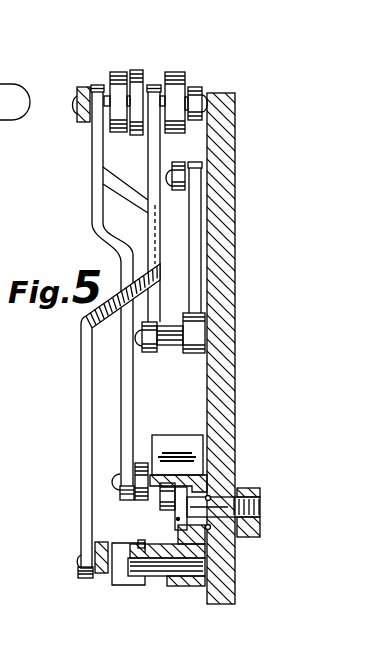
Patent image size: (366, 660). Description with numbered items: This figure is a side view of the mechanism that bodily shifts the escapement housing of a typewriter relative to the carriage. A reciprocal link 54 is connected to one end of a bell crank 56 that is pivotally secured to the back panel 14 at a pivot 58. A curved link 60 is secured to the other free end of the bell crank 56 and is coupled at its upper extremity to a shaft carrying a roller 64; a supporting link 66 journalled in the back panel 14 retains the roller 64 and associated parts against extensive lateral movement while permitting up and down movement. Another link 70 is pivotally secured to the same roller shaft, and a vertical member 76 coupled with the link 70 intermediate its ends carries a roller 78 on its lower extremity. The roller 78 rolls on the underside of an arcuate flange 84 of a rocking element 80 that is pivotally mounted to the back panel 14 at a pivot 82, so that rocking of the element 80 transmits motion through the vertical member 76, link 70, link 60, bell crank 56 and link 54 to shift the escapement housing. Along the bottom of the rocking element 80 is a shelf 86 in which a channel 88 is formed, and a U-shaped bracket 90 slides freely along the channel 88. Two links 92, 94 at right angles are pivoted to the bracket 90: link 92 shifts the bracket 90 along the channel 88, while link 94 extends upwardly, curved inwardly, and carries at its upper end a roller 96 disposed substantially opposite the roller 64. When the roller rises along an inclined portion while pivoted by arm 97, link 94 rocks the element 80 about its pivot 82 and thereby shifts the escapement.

The back panel 14 is at (236, 349).
The link 54 is at (178, 162).
The bell crank 56 is at (186, 259).
The pivot 58 is at (194, 355).
The link 60 is at (117, 192).
The roller 64 is at (115, 72).
The supporting link 66 is at (140, 70).
The link 70 is at (72, 86).
The vertical member 76 is at (97, 228).
The roller 78 is at (165, 500).
The rocking element 80 is at (205, 553).
The pivot 82 is at (215, 508).
The arcuate flange 84 is at (172, 443).
The shelf 86 is at (157, 552).
The channel 88 is at (141, 540).
The U-shaped bracket 90 is at (122, 585).
The link 92 is at (98, 570).
The link 94 is at (80, 360).
The roller 96 is at (178, 72).
The arm 97 is at (198, 88).